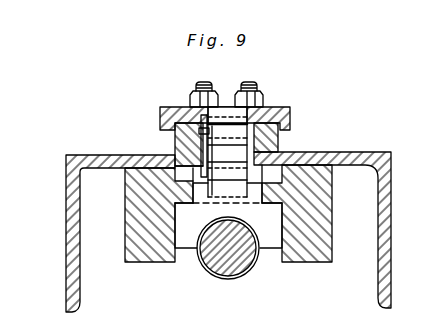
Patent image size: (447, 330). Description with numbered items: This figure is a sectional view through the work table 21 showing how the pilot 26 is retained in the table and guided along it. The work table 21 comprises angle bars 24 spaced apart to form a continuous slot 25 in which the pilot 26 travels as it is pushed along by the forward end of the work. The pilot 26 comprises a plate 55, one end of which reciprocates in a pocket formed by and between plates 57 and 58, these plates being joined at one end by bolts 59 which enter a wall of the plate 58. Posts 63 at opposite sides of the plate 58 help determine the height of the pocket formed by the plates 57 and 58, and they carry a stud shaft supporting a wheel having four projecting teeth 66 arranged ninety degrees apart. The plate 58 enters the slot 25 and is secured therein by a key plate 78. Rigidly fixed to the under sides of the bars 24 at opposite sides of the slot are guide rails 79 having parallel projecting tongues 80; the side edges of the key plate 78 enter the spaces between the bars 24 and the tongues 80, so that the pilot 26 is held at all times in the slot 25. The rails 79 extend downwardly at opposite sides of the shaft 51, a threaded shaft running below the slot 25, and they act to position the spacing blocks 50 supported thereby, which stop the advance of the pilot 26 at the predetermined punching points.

The work table 21 is at (371, 140).
The angle bars 24 is at (78, 267).
The slot 25 is at (190, 165).
The pilot 26 is at (300, 93).
The spacing blocks 50 is at (267, 240).
The shaft 51 is at (232, 266).
The plate 55 is at (280, 135).
The plate 57 is at (290, 115).
The plate 58 is at (195, 158).
The bolts 59 is at (210, 83).
The posts 63 is at (197, 138).
The teeth 66 is at (222, 200).
The key plate 78 is at (175, 172).
The guide rails 79 is at (142, 202).
The tongues 80 is at (183, 197).